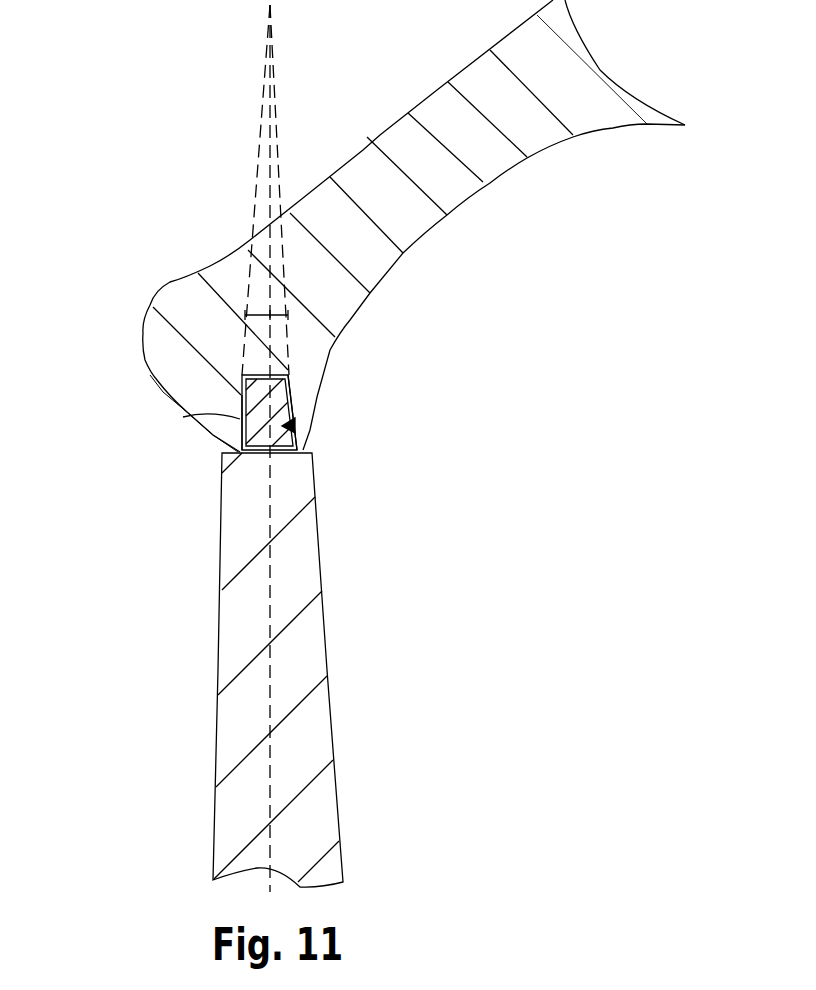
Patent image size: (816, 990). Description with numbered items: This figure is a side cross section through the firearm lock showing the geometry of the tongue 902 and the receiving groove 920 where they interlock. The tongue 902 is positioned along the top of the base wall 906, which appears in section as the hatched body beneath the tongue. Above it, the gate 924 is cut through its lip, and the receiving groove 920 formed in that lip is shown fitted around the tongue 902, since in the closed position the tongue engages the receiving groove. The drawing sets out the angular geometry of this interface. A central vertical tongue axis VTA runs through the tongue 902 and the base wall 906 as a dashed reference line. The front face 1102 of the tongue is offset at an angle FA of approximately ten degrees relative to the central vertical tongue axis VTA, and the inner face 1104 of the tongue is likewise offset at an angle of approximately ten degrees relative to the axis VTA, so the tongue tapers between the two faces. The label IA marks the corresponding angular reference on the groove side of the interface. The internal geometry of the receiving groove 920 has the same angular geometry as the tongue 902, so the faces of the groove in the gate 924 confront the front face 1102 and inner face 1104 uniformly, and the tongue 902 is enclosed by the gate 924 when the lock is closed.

The gate 924 is at (393, 123).
The receiving groove 920 is at (240, 395).
The front face 1102 is at (183, 417).
The inner face 1104 is at (290, 408).
The tongue 902 is at (296, 427).
The base wall 906 is at (329, 670).
The face angle FA is at (245, 315).
The intersection axis IA is at (288, 315).
The central vertical tongue axis VTA is at (390, 448).